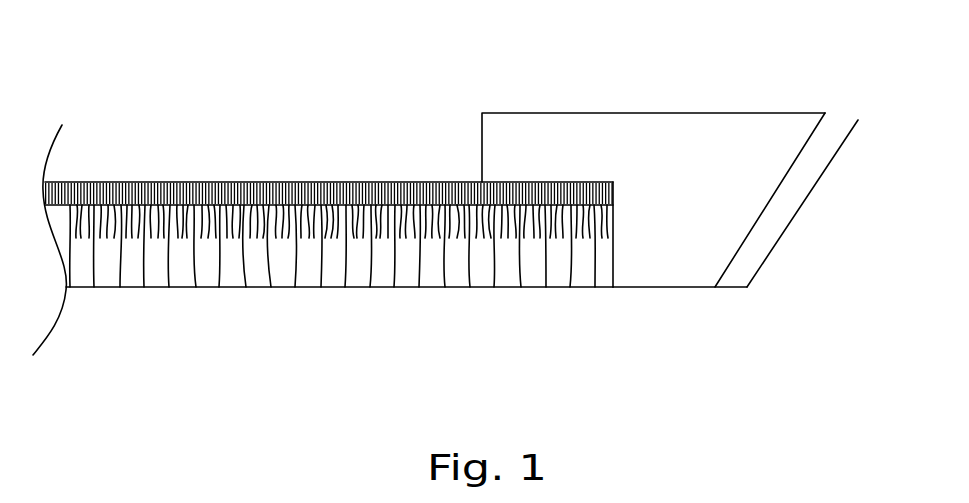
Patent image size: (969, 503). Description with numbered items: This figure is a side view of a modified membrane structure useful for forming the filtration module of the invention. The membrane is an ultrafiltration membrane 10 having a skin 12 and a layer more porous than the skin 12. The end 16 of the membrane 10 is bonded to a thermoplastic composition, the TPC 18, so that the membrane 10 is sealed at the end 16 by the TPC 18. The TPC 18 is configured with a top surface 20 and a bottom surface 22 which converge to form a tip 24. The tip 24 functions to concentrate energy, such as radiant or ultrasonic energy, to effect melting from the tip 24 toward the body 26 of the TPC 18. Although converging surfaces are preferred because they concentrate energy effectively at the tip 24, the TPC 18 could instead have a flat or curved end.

The ultrafiltration membrane 10 is at (334, 162).
The skin 12 is at (160, 182).
The end 16 is at (613, 240).
The TPC 18 is at (773, 172).
The top surface 20 is at (705, 113).
The bottom surface 22 is at (780, 240).
The tip 24 is at (848, 138).
The body 26 is at (695, 215).